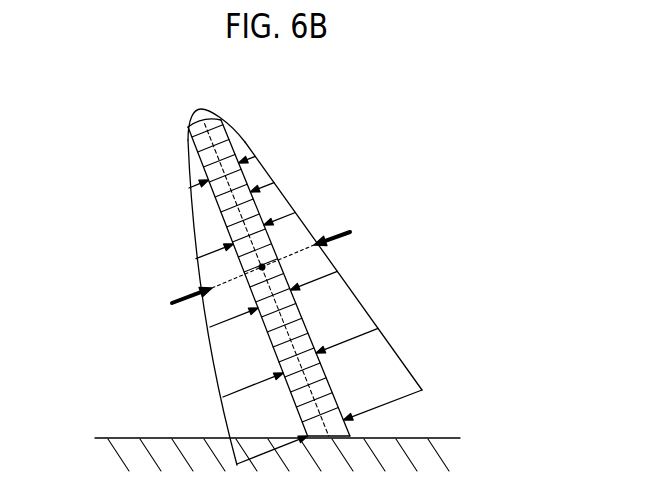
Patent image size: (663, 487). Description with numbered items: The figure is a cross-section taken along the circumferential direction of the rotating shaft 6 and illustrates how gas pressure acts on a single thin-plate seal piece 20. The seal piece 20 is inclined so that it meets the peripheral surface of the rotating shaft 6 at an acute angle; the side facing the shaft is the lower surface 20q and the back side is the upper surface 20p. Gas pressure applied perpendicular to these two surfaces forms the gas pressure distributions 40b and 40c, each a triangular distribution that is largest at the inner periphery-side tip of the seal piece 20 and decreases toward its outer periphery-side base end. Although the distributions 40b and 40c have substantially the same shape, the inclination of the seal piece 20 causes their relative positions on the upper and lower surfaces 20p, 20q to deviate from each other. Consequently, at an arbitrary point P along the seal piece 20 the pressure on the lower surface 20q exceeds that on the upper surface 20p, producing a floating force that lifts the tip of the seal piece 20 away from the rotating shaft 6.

The thin-plate seal piece 20 is at (311, 277).
The upper surface 20p is at (332, 390).
The lower surface 20q is at (294, 402).
The gas pressure distribution 40b is at (357, 296).
The gas pressure distribution 40c is at (190, 220).
The rotating shaft 6 is at (437, 438).
The arbitrary point P is at (258, 266).